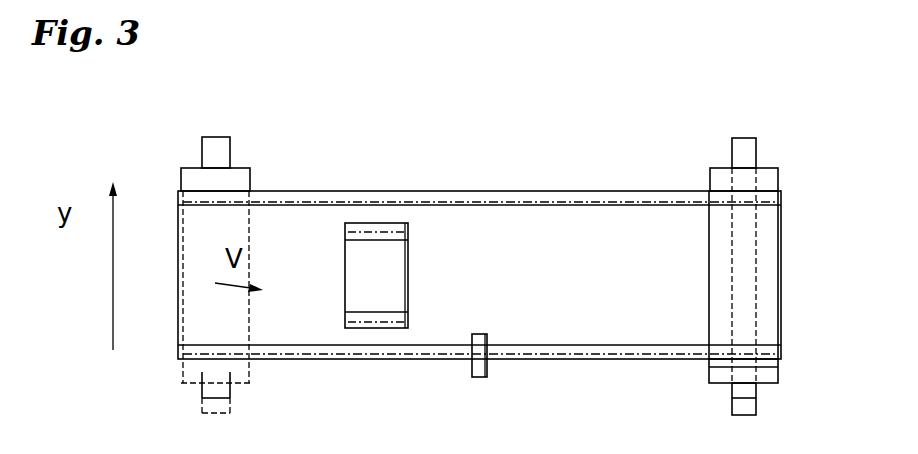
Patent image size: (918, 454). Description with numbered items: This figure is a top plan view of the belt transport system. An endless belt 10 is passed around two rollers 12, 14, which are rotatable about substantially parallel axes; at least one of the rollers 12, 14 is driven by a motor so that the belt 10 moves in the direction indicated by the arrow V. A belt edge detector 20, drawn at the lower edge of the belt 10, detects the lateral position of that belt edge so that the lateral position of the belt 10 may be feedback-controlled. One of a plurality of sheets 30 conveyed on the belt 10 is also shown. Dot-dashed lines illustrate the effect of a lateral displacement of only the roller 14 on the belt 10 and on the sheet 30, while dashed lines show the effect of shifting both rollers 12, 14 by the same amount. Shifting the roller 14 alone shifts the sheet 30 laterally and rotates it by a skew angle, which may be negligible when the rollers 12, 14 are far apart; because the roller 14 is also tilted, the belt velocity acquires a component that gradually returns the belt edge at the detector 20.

The endless belt 10 is at (437, 190).
The roller 12 is at (768, 172).
The roller 14 is at (242, 172).
The belt edge detector 20 is at (478, 377).
The sheet 30 is at (408, 243).